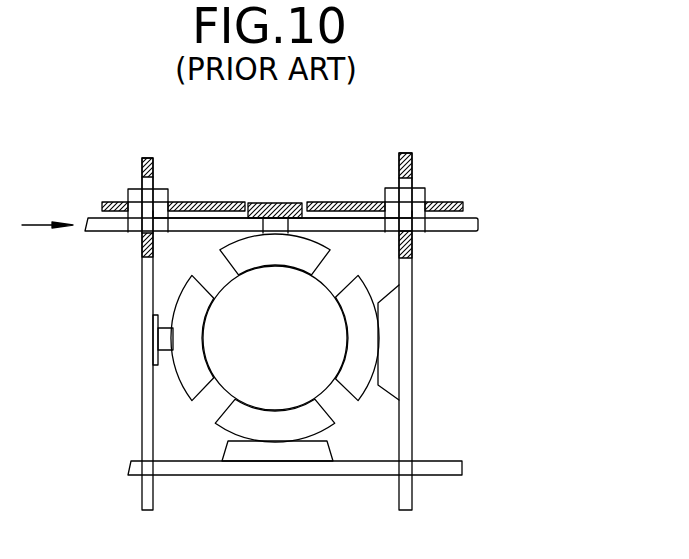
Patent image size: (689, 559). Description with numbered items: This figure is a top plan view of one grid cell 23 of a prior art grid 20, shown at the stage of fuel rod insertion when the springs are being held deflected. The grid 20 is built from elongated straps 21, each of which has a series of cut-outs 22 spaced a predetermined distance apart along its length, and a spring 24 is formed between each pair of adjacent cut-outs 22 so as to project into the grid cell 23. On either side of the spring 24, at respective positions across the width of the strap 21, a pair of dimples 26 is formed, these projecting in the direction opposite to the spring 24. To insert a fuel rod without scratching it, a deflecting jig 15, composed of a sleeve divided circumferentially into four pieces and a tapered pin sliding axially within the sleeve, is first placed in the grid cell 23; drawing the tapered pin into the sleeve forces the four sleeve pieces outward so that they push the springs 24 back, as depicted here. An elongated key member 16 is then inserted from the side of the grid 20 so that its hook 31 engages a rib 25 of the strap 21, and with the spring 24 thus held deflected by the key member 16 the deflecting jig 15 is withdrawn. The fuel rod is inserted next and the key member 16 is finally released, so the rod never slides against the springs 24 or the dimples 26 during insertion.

The deflecting jig 15 is at (373, 287).
The key member 16 is at (467, 223).
The grid 20 is at (425, 178).
The elongated strap 21 is at (143, 385).
The cut-out 22 is at (155, 188).
The grid cell 23 is at (168, 417).
The spring 24 is at (278, 203).
The rib 25 is at (222, 202).
The dimple 26 is at (283, 458).
The hook 31 is at (137, 190).